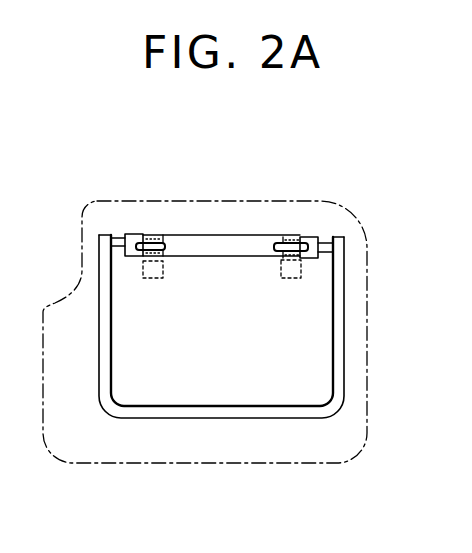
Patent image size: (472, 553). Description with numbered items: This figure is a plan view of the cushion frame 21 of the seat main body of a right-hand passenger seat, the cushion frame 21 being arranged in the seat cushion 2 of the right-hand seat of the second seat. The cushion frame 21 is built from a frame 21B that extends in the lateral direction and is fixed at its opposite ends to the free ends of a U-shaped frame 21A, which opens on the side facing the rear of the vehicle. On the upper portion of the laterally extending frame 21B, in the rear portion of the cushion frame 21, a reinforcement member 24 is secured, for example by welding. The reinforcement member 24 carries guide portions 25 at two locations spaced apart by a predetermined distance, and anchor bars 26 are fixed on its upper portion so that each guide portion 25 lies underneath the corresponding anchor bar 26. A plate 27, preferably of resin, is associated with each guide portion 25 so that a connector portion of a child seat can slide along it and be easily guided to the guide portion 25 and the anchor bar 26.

The seat cushion 2 is at (80, 199).
The cushion frame 21 is at (419, 148).
The U-shaped frame 21A is at (345, 253).
The laterally extending frame 21B is at (325, 240).
The reinforcement member 24 is at (215, 233).
The guide portion 25 is at (143, 233).
The anchor bar 26 is at (170, 233).
The plate 27 is at (143, 267).